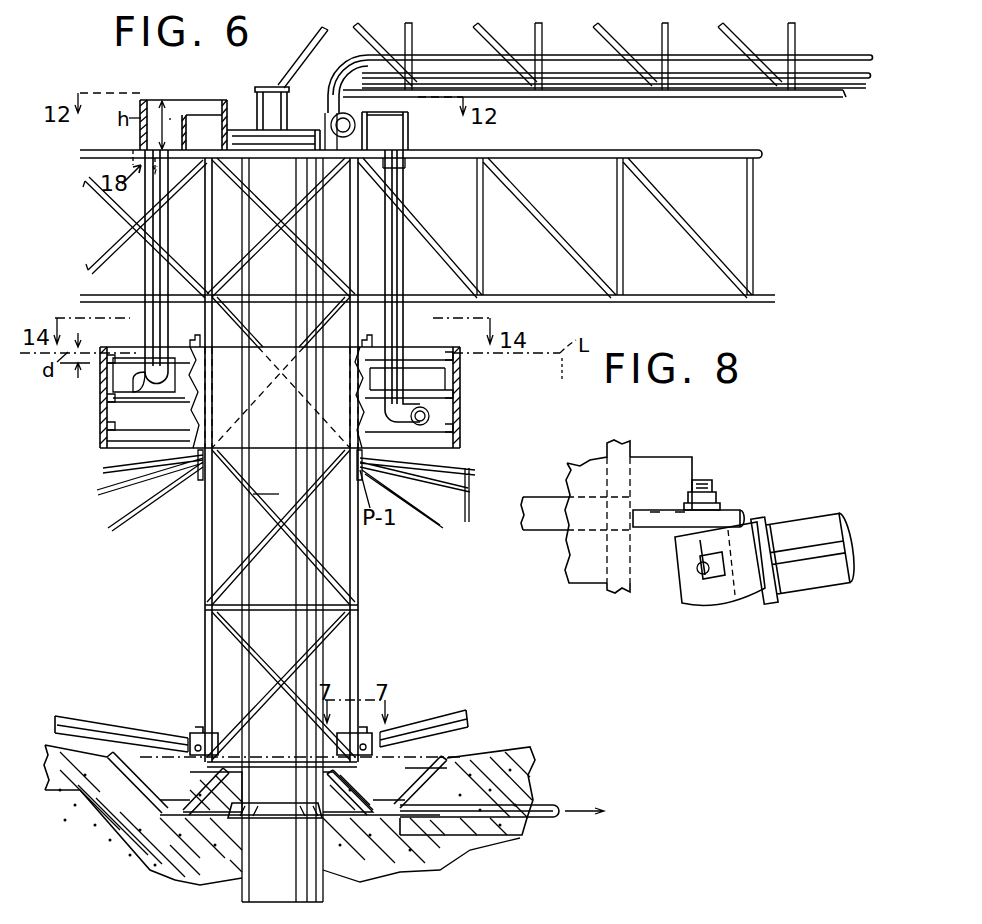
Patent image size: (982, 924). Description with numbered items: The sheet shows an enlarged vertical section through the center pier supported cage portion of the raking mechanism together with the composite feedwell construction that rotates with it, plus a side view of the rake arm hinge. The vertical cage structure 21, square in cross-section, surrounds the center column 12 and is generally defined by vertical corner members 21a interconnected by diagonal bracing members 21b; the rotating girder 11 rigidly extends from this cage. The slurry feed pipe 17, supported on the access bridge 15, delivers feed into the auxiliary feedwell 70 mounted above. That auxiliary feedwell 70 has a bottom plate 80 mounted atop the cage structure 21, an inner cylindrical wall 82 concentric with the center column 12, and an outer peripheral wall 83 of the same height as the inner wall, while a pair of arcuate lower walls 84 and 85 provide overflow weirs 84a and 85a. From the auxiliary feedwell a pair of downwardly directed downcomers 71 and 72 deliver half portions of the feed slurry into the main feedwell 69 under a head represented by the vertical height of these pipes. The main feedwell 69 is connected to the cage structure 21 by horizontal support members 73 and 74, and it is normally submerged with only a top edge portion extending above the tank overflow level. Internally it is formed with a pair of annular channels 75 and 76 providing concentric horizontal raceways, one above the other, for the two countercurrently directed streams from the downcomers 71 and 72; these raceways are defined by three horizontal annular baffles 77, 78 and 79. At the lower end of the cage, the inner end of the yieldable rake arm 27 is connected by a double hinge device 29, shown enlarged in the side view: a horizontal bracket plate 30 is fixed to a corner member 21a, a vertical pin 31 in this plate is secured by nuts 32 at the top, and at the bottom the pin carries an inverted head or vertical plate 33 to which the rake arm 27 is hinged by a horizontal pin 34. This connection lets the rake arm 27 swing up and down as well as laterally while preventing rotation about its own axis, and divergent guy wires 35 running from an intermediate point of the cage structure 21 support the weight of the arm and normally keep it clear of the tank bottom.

In FIG. 6, the rotating girder 11 is at (580, 153).
In FIG. 6, the center column 12 is at (267, 482).
In FIG. 6, the access bridge 15 is at (635, 86).
In FIG. 6, the slurry feed pipe 17 is at (422, 62).
In FIG. 6, the vertical cage structure 21 is at (358, 554).
In FIG. 8, the vertical corner members 21a is at (632, 457).
In FIG. 6, the diagonal bracing members 21b is at (262, 548).
In FIG. 6, the yieldable rake arm 27 is at (421, 729).
In FIG. 8, the yieldable rake arm 27 is at (820, 568).
In FIG. 6, the double hinge device 29 is at (358, 736).
In FIG. 8, the double hinge device 29 is at (766, 496).
In FIG. 8, the horizontal bracket plate 30 is at (660, 527).
In FIG. 8, the vertical pin 31 is at (690, 518).
In FIG. 8, the nuts 32 is at (714, 493).
In FIG. 8, the vertical plate 33 is at (710, 603).
In FIG. 8, the horizontal pin 34 is at (700, 568).
In FIG. 6, the guy wires 35 is at (440, 516).
In FIG. 6, the main feedwell 69 is at (100, 418).
In FIG. 6, the auxiliary feedwell 70 is at (402, 153).
In FIG. 6, the downcomer 71 is at (150, 276).
In FIG. 6, the downcomer 72 is at (396, 284).
In FIG. 6, the horizontal support member 73 is at (194, 343).
In FIG. 6, the horizontal support member 74 is at (365, 343).
In FIG. 6, the annular channel 75 is at (440, 384).
In FIG. 6, the annular channel 76 is at (440, 416).
In FIG. 6, the horizontal annular baffle 77 is at (123, 364).
In FIG. 6, the horizontal annular baffle 78 is at (170, 404).
In FIG. 6, the horizontal annular baffle 79 is at (117, 452).
In FIG. 6, the bottom plate 80 is at (142, 144).
In FIG. 6, the inner cylindrical wall 82 is at (229, 128).
In FIG. 6, the outer peripheral wall 83 is at (143, 100).
In FIG. 6, the arcuate lower wall 84 is at (198, 118).
In FIG. 6, the overflow weir 84a is at (201, 77).
In FIG. 6, the arcuate lower wall 85 is at (370, 133).
In FIG. 6, the overflow weir 85a is at (370, 114).